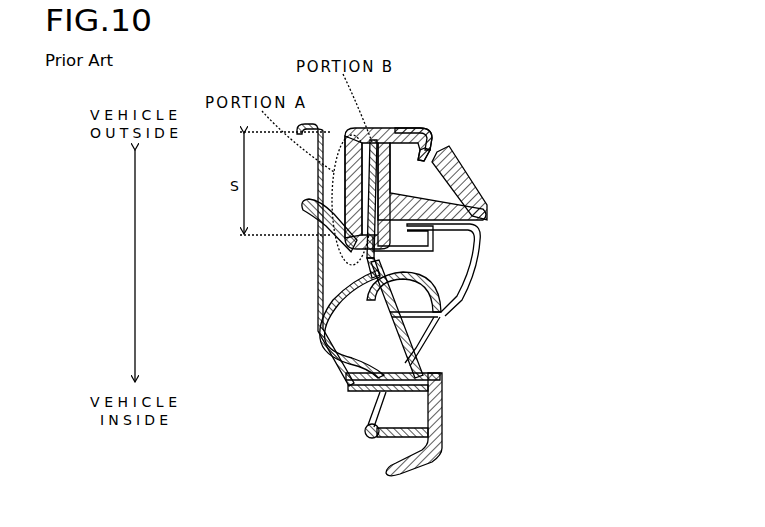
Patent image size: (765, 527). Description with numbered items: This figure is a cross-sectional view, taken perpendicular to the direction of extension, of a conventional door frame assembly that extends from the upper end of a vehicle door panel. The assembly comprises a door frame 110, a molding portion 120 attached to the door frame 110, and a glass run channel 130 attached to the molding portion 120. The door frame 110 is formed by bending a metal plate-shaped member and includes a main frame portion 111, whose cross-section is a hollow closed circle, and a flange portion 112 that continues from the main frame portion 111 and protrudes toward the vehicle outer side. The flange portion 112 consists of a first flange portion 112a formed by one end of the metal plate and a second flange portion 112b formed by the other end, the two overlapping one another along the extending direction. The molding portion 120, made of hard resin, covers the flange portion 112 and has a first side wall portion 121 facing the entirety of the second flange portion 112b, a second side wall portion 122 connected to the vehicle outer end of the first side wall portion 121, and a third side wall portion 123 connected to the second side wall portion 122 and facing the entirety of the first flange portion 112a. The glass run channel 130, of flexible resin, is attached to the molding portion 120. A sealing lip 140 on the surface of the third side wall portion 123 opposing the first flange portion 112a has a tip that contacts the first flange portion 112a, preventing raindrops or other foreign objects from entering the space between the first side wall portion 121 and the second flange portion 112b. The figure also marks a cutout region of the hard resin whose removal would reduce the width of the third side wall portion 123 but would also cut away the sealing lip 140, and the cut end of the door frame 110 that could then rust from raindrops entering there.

The door frame 110 is at (483, 262).
The main frame portion 111 is at (478, 232).
The flange portion 112 is at (384, 188).
The first flange portion 112a is at (333, 148).
The second flange portion 112b is at (388, 164).
The molding portion 120 is at (392, 128).
The first side wall portion 121 is at (405, 125).
The second side wall portion 122 is at (399, 128).
The third side wall portion 123 is at (347, 208).
The glass run channel 130 is at (480, 165).
The sealing lip 140 is at (320, 192).